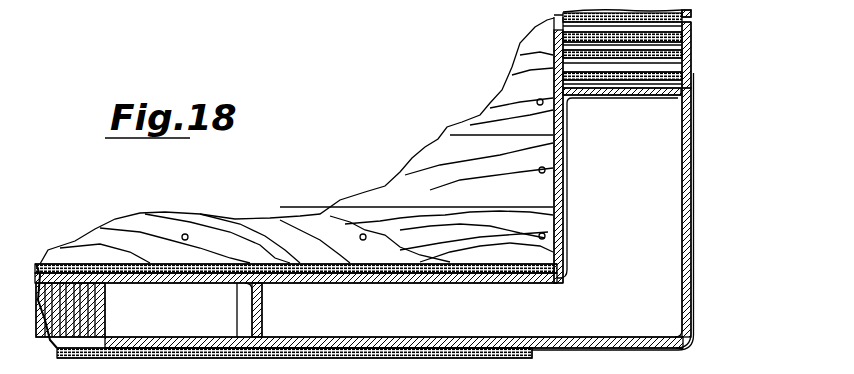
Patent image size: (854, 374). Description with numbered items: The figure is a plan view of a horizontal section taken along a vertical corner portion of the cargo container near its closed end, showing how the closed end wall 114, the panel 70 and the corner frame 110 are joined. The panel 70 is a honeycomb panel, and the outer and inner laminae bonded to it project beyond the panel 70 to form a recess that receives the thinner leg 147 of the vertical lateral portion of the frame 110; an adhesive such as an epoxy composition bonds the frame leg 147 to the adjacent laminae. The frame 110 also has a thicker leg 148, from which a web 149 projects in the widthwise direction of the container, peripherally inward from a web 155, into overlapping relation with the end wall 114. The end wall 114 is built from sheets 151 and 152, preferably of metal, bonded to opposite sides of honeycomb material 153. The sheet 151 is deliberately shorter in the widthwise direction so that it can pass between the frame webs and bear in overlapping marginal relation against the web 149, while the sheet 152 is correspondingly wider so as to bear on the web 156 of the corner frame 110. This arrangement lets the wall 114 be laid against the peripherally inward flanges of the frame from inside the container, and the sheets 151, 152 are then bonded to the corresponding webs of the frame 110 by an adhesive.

The panel 70 is at (50, 328).
The frame 110 is at (694, 209).
The closed end wall 114 is at (548, 55).
The thinner leg 147 is at (415, 284).
The thicker leg 148 is at (671, 136).
The web 149 is at (691, 62).
The sheet 151 is at (688, 28).
The sheet 152 is at (554, 22).
The honeycomb material 153 is at (565, 166).
The web 155 is at (649, 96).
The web 156 is at (567, 183).